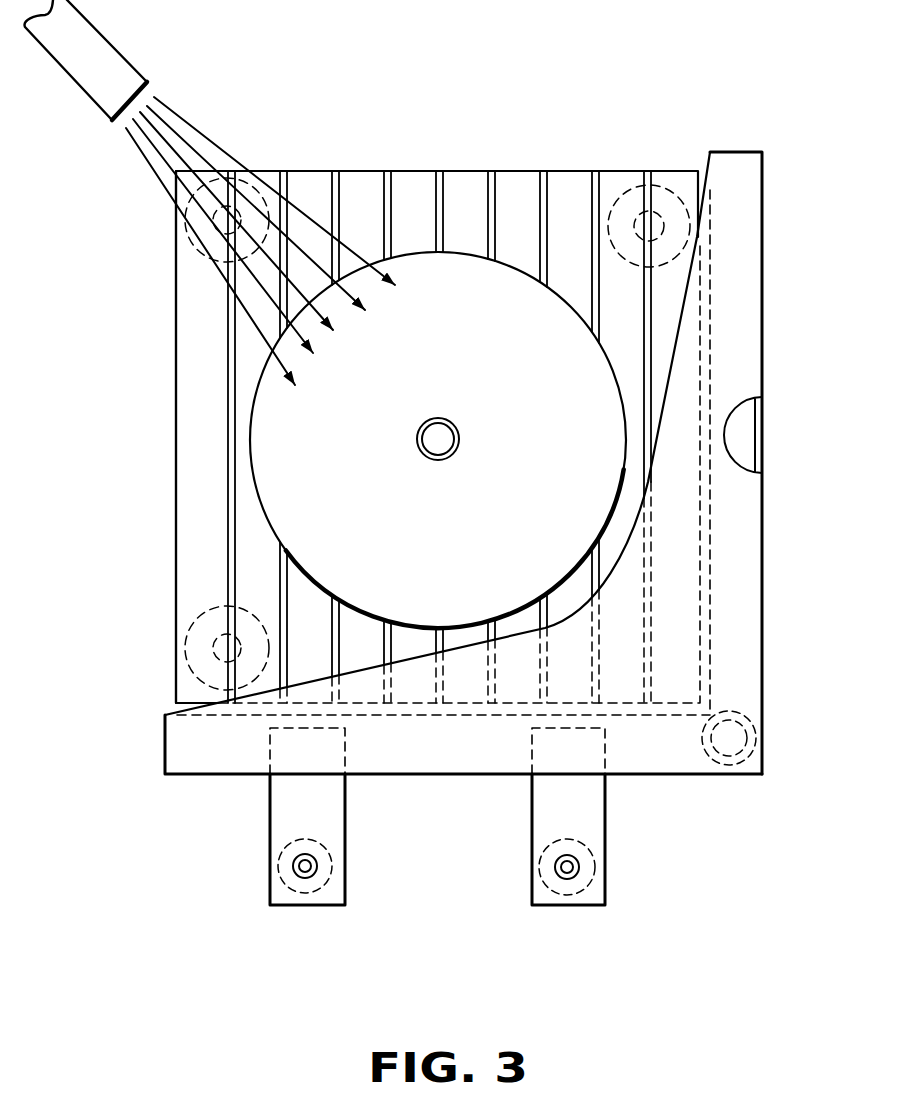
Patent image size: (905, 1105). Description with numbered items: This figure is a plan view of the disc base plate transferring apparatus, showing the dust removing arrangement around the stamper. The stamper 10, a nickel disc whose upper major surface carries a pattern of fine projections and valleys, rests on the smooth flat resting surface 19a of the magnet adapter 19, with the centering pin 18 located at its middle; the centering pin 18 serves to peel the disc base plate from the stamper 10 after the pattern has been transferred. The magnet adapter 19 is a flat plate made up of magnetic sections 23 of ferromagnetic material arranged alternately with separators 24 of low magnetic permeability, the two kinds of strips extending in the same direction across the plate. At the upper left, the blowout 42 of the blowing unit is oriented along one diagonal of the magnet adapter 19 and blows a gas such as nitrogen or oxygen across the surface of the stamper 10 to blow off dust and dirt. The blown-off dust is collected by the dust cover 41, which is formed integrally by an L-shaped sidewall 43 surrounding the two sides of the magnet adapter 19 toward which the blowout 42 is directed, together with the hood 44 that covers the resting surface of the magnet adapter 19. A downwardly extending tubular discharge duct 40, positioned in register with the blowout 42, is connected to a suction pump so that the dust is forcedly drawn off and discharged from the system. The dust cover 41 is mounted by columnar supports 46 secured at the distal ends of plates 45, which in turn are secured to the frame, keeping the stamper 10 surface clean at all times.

The stamper 10 is at (277, 472).
The centering pin 18 is at (437, 425).
The magnet adapter 19 is at (190, 395).
The resting surface 19a is at (197, 590).
The magnetic sections 23 is at (370, 183).
The separators 24 is at (337, 188).
The discharge duct 40 is at (729, 752).
The dust cover 41 is at (768, 597).
The blowout 42 is at (108, 57).
The sidewall 43 is at (764, 700).
The hood 44 is at (682, 535).
The plates 45 is at (330, 808).
The columnar supports 46 is at (322, 872).